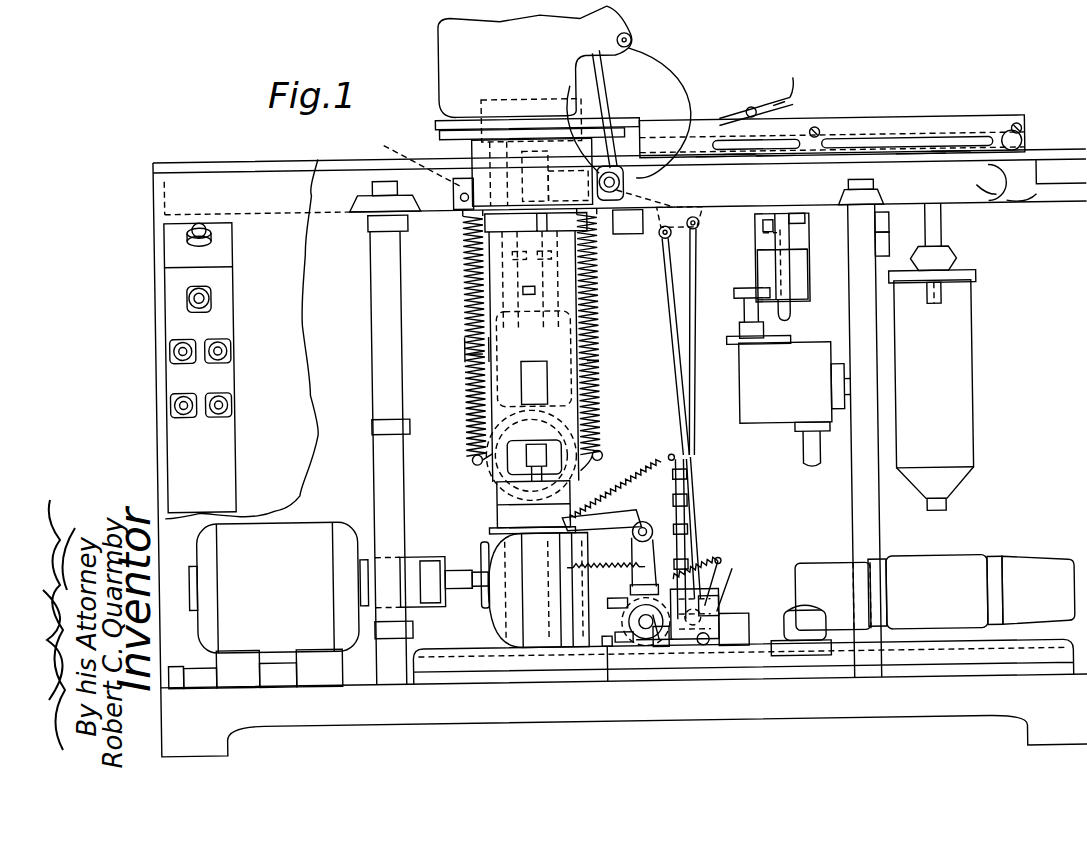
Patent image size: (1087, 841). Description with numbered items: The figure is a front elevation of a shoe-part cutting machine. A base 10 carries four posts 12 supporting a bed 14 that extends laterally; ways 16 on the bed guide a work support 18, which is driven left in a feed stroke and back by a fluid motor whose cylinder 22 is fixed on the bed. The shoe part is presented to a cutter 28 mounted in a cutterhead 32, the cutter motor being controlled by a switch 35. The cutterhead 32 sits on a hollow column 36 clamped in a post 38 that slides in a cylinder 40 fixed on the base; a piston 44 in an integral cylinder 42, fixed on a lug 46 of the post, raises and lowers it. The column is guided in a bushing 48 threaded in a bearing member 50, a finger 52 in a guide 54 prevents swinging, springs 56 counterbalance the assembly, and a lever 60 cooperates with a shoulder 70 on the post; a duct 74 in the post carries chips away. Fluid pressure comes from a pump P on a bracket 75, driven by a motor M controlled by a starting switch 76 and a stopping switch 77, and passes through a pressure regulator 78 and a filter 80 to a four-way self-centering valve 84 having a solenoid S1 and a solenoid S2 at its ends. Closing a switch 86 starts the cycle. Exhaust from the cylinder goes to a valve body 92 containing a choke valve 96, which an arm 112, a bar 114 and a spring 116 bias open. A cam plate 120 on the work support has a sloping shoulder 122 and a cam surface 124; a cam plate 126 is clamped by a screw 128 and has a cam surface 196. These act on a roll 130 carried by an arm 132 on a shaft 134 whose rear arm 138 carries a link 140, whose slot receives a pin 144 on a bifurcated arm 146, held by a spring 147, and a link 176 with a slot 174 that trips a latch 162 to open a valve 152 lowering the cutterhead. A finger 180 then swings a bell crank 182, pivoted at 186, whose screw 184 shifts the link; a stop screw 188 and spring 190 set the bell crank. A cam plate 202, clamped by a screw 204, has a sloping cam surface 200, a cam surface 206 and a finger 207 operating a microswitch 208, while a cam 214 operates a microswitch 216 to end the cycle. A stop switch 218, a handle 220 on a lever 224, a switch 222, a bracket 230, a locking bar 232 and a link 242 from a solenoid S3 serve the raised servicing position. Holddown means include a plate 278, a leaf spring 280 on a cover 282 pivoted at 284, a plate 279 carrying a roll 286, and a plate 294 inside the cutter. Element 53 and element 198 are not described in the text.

The base 10 is at (334, 718).
The posts 12 is at (388, 465).
The bed 14 is at (336, 200).
The ways 16 is at (341, 153).
The work support 18 is at (1032, 142).
The cylinder 22 is at (1022, 192).
The cutter 28 is at (462, 122).
The cutterhead 32 is at (444, 52).
The switch 35 is at (232, 345).
The hollow column 36 is at (605, 383).
The post 38 is at (575, 493).
The cylinder 40 is at (487, 529).
The cylinder 42 is at (515, 512).
The piston 44 is at (592, 468).
The lug 46 is at (521, 452).
The bushing 48 is at (478, 120).
The bearing member 50 is at (472, 133).
The finger 52 is at (466, 338).
The bracket 53 is at (806, 290).
The guide 54 is at (565, 283).
The springs 56 is at (470, 353).
The lever 60 is at (465, 288).
The shoulder 70 is at (529, 395).
The duct 74 is at (466, 410).
The bracket 75 is at (601, 652).
The starting switch 76 is at (226, 401).
The stopping switch 77 is at (177, 403).
The pressure regulator 78 is at (777, 414).
The filter 80 is at (976, 386).
The four-way self-centering valve 84 is at (950, 560).
The switch 86 is at (188, 230).
The valve body 92 is at (705, 655).
The choke valve 96 is at (640, 620).
The arm 112 is at (626, 655).
The bar 114 is at (722, 561).
The spring 116 is at (714, 556).
The cam plate 120 is at (814, 125).
The sloping shoulder 122 is at (703, 158).
The cam surface 124 is at (860, 145).
The cam plate 126 is at (683, 100).
The screw 128 is at (772, 146).
The roll 130 is at (573, 117).
The arm 132 is at (612, 100).
The shaft 134 is at (624, 165).
The arm 138 is at (694, 213).
The link 140 is at (693, 342).
The pin 144 is at (694, 655).
The bifurcated arm 146 is at (660, 655).
The spring 147 is at (667, 455).
The valve 152 is at (738, 630).
The latch 162 is at (732, 607).
The slot 174 is at (740, 666).
The link 176 is at (678, 322).
The finger 180 is at (626, 522).
The bell crank 182 is at (648, 527).
The screw 184 is at (648, 592).
The pivot 186 is at (652, 526).
The stop screw 188 is at (692, 540).
The spring 190 is at (575, 570).
The cam surface 196 is at (744, 158).
The slot 198 is at (774, 158).
The sloping cam surface 200 is at (920, 142).
The cam plate 202 is at (990, 162).
The screw 204 is at (946, 150).
The cam surface 206 is at (946, 158).
The finger 207 is at (992, 202).
The microswitch 208 is at (614, 234).
The cam 214 is at (407, 158).
The microswitch 216 is at (460, 220).
The stop switch 218 is at (174, 345).
The handle 220 is at (808, 221).
The switch 222 is at (189, 292).
The lever 224 is at (772, 230).
The bracket 230 is at (796, 312).
The bar 232 is at (775, 233).
The link 242 is at (805, 264).
The plate 278 is at (752, 110).
The plate 279 is at (790, 95).
The leaf spring 280 is at (756, 107).
The cover 282 is at (674, 78).
The pivot 284 is at (638, 41).
The roll 286 is at (784, 108).
The plate 294 is at (520, 115).
The motor M is at (305, 526).
The pump P is at (490, 606).
The solenoid S1 is at (806, 566).
The solenoid S2 is at (1030, 566).
The solenoid S3 is at (806, 290).